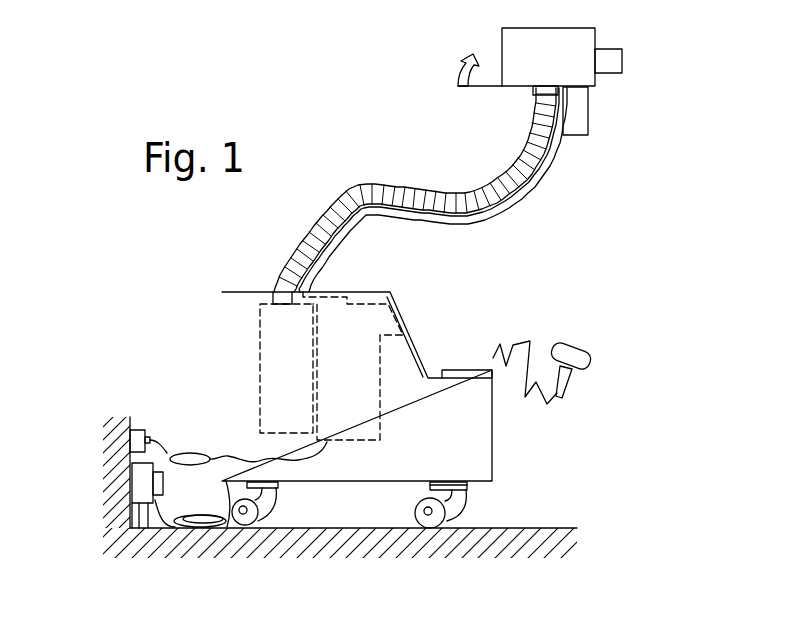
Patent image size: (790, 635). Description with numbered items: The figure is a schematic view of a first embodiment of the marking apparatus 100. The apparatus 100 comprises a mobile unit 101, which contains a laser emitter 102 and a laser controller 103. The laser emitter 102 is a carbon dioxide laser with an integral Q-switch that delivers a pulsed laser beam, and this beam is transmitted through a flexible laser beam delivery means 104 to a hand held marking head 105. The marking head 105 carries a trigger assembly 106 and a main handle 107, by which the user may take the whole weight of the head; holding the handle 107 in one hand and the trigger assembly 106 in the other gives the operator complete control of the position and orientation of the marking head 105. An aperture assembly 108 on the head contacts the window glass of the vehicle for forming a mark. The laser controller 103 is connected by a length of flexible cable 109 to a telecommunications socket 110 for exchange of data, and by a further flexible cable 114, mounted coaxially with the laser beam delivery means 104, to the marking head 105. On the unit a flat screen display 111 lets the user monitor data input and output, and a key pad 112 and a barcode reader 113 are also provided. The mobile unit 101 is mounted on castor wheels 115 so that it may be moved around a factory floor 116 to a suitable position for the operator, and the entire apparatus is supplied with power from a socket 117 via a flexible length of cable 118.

The apparatus 100 is at (602, 275).
The mobile unit 101 is at (492, 433).
The laser emitter 102 is at (277, 350).
The laser controller 103 is at (358, 308).
The flexible laser beam delivery means 104 is at (362, 192).
The hand held marking head 105 is at (548, 38).
The trigger assembly 106 is at (449, 58).
The main handle 107 is at (577, 127).
The aperture assembly 108 is at (610, 63).
The flexible cable 109 is at (162, 445).
The telecommunications socket 110 is at (135, 428).
The flat screen display 111 is at (420, 338).
The key pad 112 is at (470, 370).
The barcode reader 113 is at (563, 388).
The flexible cable 114 is at (503, 213).
The castor wheels 115 is at (257, 520).
The factory floor 116 is at (540, 528).
The socket 117 is at (140, 488).
The flexible length of cable 118 is at (152, 528).